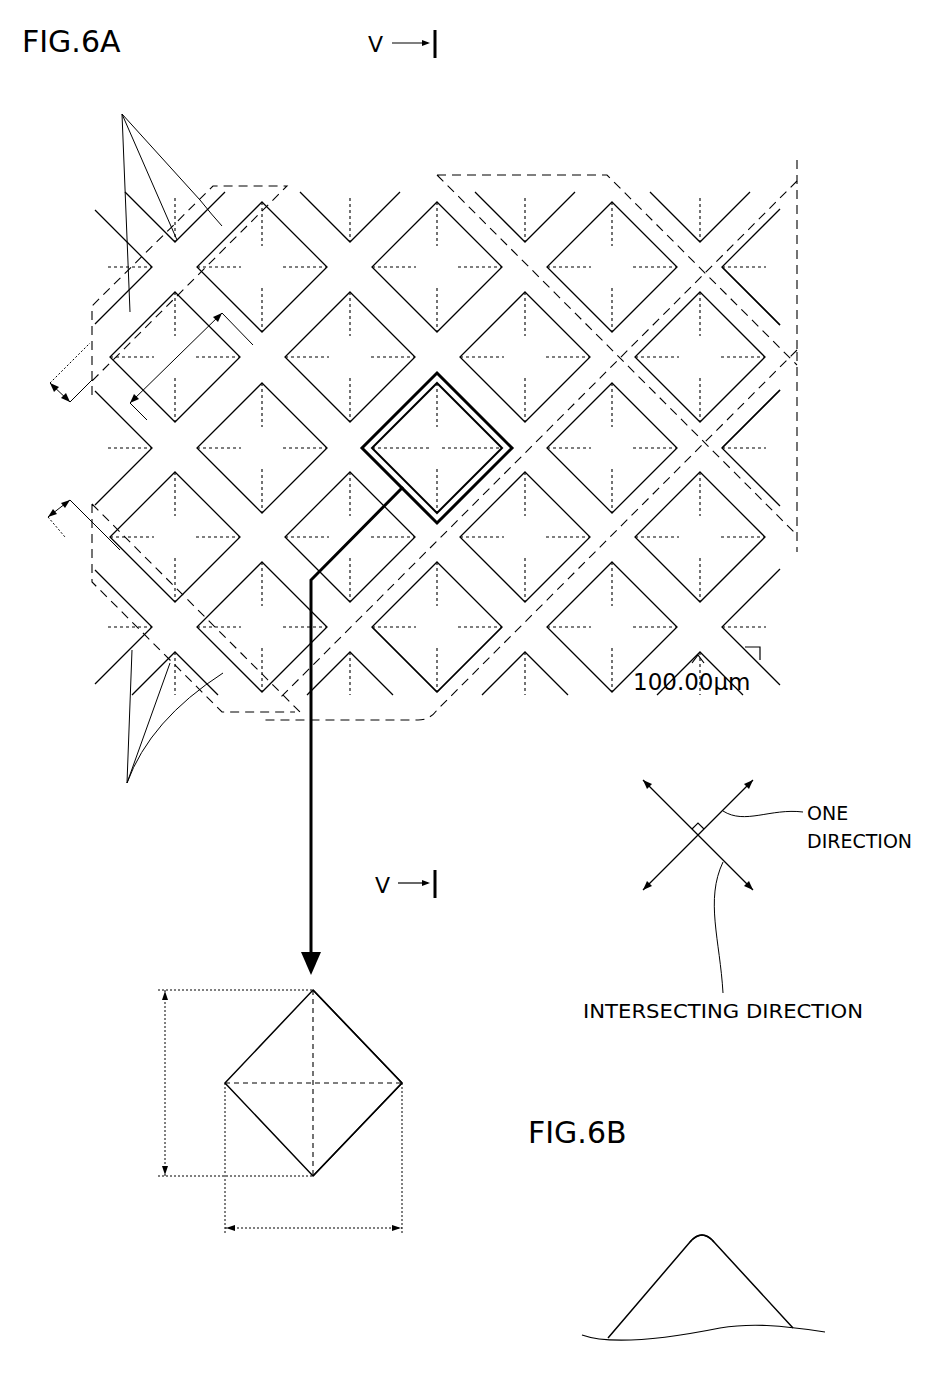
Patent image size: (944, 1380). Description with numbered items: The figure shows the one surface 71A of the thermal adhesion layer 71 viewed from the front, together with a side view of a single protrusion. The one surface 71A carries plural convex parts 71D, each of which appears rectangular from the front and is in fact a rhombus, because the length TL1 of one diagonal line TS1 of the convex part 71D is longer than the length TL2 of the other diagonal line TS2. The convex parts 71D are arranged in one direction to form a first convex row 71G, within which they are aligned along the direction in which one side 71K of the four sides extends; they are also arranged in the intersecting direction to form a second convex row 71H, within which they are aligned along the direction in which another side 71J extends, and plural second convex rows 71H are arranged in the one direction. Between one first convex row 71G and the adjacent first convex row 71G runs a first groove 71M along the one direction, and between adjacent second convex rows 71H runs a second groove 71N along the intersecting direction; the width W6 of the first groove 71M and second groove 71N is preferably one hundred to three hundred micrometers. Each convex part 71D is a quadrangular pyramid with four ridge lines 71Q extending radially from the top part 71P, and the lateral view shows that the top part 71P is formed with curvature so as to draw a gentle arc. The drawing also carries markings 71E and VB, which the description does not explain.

In FIG. 6A, the thermal adhesion layer 71 is at (675, 163).
In FIG. 6A, the convex part 71D is at (423, 690).
In FIG. 6B, the convex part 71D is at (770, 1240).
In FIG. 6A, the top part 71P is at (435, 447).
In FIG. 6B, the top part 71P is at (702, 1228).
In FIG. 6A, the ridge line 71Q is at (437, 447).
In FIG. 6A, the one surface 71A is at (583, 212).
In FIG. 6A, the first groove 71M is at (238, 186).
In FIG. 6A, the second groove 71N is at (240, 722).
In FIG. 6A, the edge line 71E is at (160, 451).
In FIG. 6A, the first convex row 71G is at (797, 266).
In FIG. 6A, the second convex row 71H is at (797, 446).
In FIG. 6A, the side 71J is at (386, 652).
In FIG. 6A, the side 71K is at (490, 658).
In FIG. 6A, the valley bottom width VB is at (207, 388).
In FIG. 6A, the width W6 is at (71, 446).
In FIG. 6A, the length TL1 is at (212, 1083).
In FIG. 6A, the length TL2 is at (313, 1174).
In FIG. 6A, the diagonal line TS1 is at (318, 1040).
In FIG. 6A, the diagonal line TS2 is at (360, 1078).